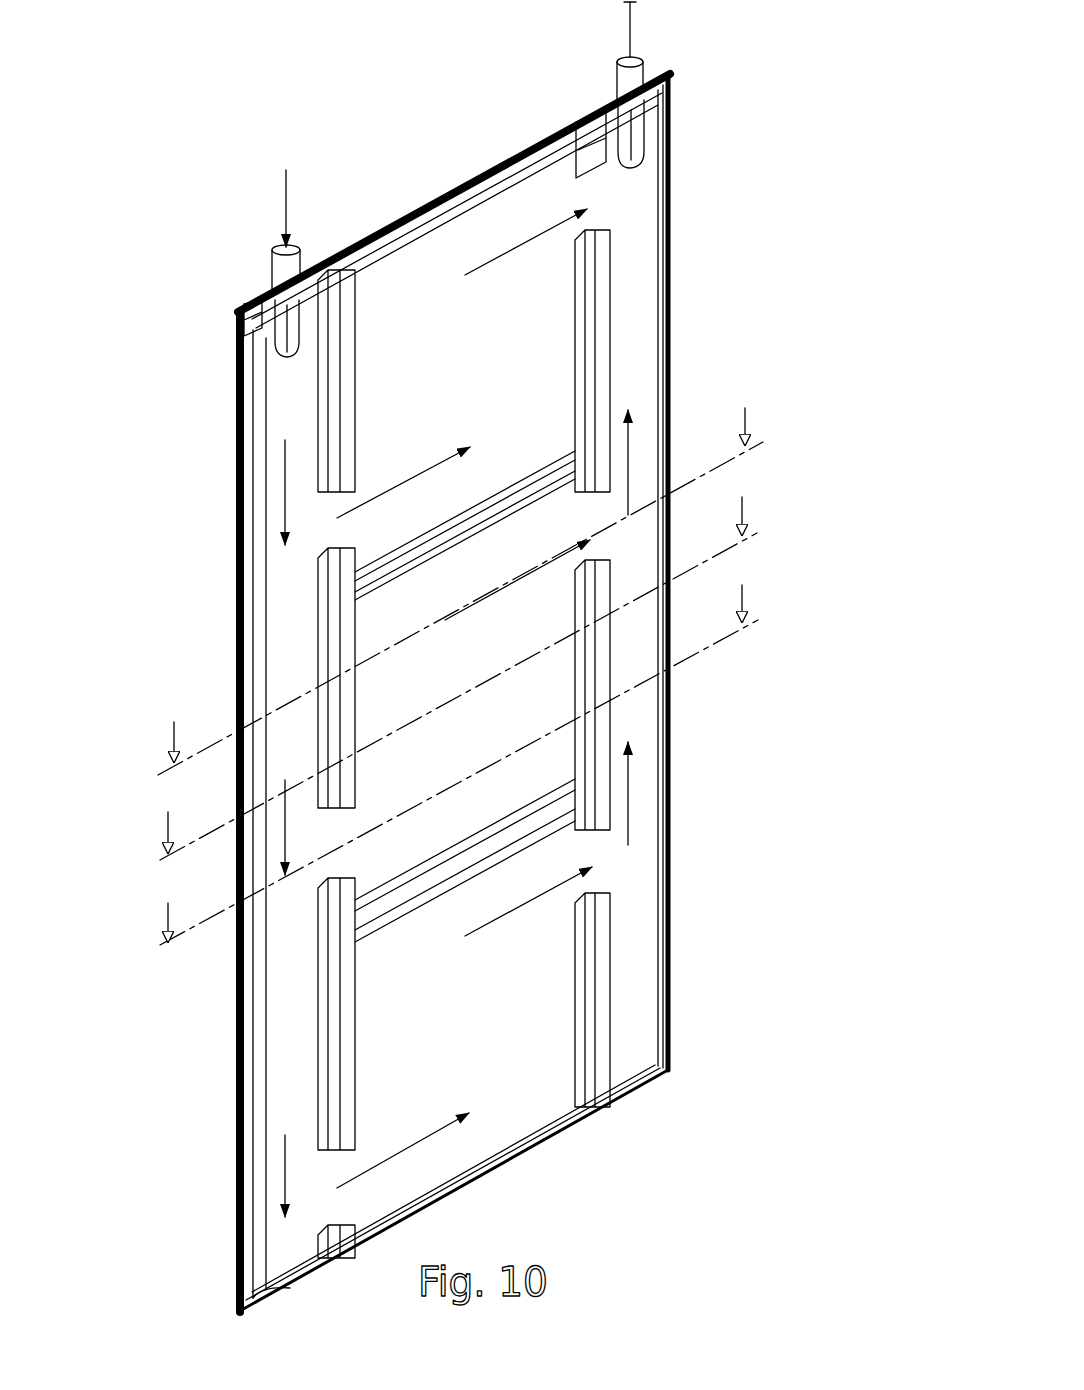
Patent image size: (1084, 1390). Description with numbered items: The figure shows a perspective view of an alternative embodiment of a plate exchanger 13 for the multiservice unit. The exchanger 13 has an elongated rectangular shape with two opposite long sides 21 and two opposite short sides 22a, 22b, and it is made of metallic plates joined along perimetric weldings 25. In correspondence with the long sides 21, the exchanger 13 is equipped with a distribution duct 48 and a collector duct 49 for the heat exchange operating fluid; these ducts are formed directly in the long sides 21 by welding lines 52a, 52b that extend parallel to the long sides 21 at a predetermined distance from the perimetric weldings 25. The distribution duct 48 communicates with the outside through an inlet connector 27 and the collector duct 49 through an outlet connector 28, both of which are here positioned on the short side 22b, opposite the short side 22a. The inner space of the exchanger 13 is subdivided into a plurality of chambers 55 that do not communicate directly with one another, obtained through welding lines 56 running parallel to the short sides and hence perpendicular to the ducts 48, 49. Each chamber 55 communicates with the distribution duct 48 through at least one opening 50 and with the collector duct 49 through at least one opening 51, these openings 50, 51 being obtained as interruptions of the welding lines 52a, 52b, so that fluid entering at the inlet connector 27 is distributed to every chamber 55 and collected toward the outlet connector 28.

The plate exchanger 13 is at (502, 657).
The long sides 21 is at (226, 1160).
The short side 22a is at (520, 1155).
The short side 22b is at (450, 191).
The perimetric weldings 25 is at (575, 150).
The inlet connector 27 is at (275, 271).
The outlet connector 28 is at (645, 70).
The distribution duct 48 is at (263, 405).
The collector duct 49 is at (630, 265).
The openings 50 is at (348, 492).
The openings 51 is at (588, 222).
The welding line 52a is at (322, 645).
The welding line 52b is at (605, 385).
The chambers 55 is at (500, 376).
The welding lines 56 is at (455, 536).